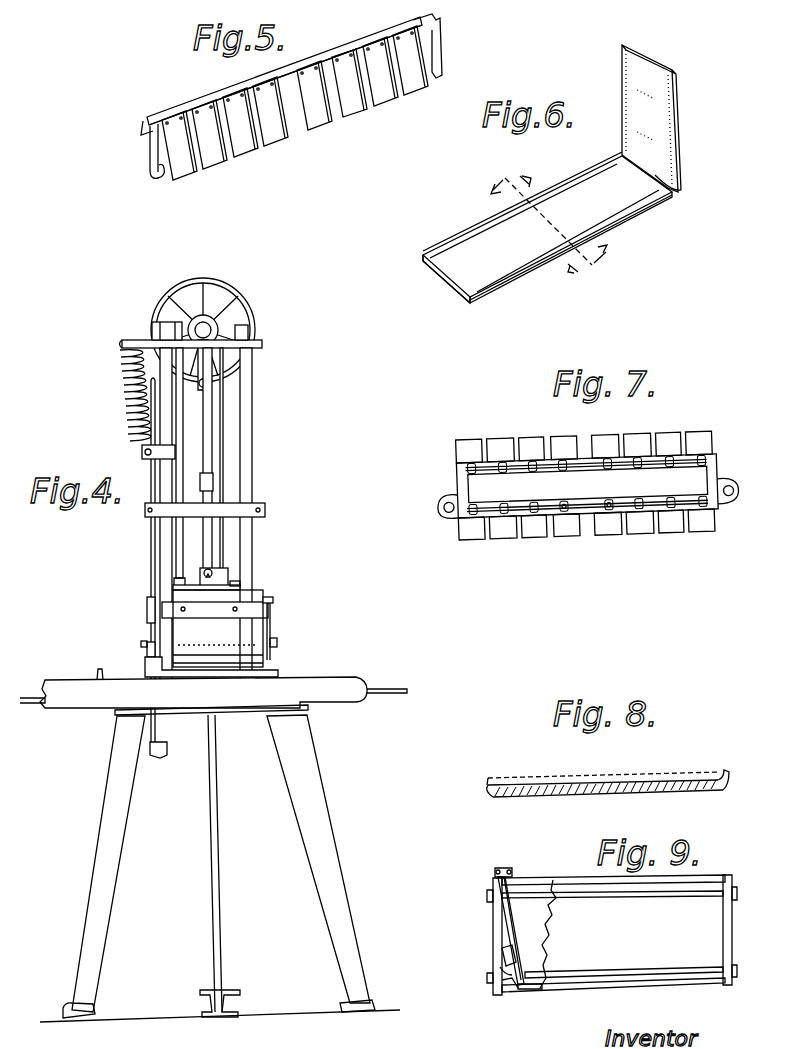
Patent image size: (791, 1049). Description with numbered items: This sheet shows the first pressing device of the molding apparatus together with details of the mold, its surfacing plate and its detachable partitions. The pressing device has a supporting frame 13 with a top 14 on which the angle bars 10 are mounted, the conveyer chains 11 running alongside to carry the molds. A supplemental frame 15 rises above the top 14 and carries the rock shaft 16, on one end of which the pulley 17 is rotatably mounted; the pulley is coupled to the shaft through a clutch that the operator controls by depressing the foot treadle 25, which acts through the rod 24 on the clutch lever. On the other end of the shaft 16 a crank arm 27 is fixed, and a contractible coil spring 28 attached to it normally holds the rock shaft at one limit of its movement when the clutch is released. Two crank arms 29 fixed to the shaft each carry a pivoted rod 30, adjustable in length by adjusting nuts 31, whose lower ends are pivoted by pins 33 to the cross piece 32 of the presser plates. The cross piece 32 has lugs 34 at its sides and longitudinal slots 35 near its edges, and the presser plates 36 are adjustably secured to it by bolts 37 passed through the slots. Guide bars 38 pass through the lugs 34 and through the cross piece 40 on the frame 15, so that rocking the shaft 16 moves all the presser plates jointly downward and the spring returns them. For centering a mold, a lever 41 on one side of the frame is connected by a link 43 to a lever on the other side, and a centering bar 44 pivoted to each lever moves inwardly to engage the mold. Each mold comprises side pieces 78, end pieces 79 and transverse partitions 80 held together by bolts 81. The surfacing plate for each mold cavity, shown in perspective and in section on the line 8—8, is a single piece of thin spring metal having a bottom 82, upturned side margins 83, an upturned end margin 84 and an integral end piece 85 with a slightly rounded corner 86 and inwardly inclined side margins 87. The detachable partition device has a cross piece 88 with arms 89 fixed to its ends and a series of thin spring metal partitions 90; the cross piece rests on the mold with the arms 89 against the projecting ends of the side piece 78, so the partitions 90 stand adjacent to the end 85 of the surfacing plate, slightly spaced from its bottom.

In FIG. 6, the section line 8 is at (551, 226).
In FIG. 4, the angle bars 10 is at (193, 688).
In FIG. 4, the conveyer chains 11 is at (385, 695).
In FIG. 4, the supporting frame 13 is at (107, 892).
In FIG. 4, the top 14 is at (200, 714).
In FIG. 4, the supplemental frame 15 is at (248, 482).
In FIG. 4, the rock shaft 16 is at (213, 328).
In FIG. 4, the pulley 17 is at (206, 328).
In FIG. 4, the rod 24 is at (212, 790).
In FIG. 4, the foot treadle 25 is at (232, 990).
In FIG. 4, the crank arm 27 is at (140, 340).
In FIG. 4, the contractible coil spring 28 is at (126, 380).
In FIG. 4, the crank arms 29 is at (208, 382).
In FIG. 4, the rods 30 is at (207, 447).
In FIG. 4, the adjusting nuts 31 is at (213, 480).
In FIG. 7, the cross piece 32 is at (588, 484).
In FIG. 4, the cross piece 32 is at (220, 580).
In FIG. 4, the pins 33 is at (208, 580).
In FIG. 7, the lugs 34 is at (722, 497).
In FIG. 4, the lugs 34 is at (240, 585).
In FIG. 7, the longitudinal slots 35 is at (692, 466).
In FIG. 7, the presser plates 36 is at (700, 530).
In FIG. 7, the bolts 37 is at (610, 515).
In FIG. 4, the guide bars 38 is at (188, 466).
In FIG. 4, the cross piece 40 is at (157, 322).
In FIG. 4, the lever 41 is at (151, 533).
In FIG. 4, the link 43 is at (156, 766).
In FIG. 4, the centering bar 44 is at (147, 611).
In FIG. 9, the side pieces 78 is at (493, 919).
In FIG. 9, the end pieces 79 is at (613, 933).
In FIG. 4, the end pieces 79 is at (218, 628).
In FIG. 9, the transverse partitions 80 is at (530, 912).
In FIG. 9, the bolts 81 is at (677, 913).
In FIG. 4, the bolts 81 is at (275, 645).
In FIG. 6, the bottom 82 is at (547, 229).
In FIG. 8, the bottom 82 is at (525, 788).
In FIG. 6, the upturned side margins 83 is at (566, 188).
In FIG. 8, the upturned side margins 83 is at (487, 787).
In FIG. 9, the upturned side margins 83 is at (532, 990).
In FIG. 6, the upturned end margin 84 is at (450, 278).
In FIG. 8, the upturned end margin 84 is at (573, 785).
In FIG. 6, the end piece 85 is at (650, 118).
In FIG. 6, the rounded corner 86 is at (660, 182).
In FIG. 6, the inclined side margins 87 is at (622, 97).
In FIG. 5, the cross piece 88 is at (153, 118).
In FIG. 9, the cross piece 88 is at (509, 917).
In FIG. 5, the arms 89 is at (150, 150).
In FIG. 9, the arms 89 is at (502, 962).
In FIG. 5, the partitions 90 is at (285, 135).
In FIG. 9, the partitions 90 is at (520, 990).